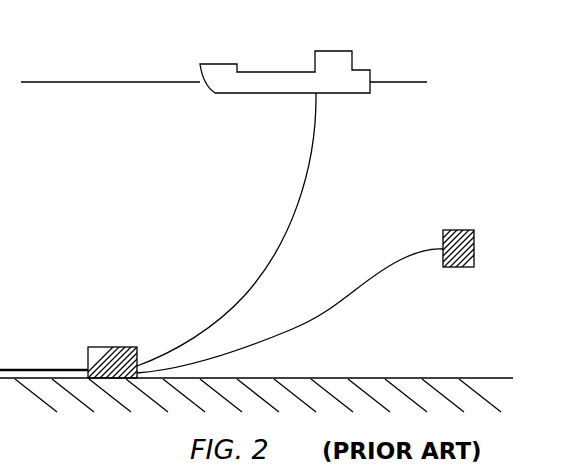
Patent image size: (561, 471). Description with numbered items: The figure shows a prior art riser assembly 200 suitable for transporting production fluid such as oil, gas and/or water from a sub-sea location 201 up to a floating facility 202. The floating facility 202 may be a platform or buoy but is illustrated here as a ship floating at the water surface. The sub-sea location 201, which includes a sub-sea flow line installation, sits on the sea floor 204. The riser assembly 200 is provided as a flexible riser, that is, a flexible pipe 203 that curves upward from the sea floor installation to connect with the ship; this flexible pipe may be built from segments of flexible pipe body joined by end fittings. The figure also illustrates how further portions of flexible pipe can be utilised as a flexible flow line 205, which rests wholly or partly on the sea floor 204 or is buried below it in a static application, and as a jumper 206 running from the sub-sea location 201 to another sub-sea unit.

The riser assembly 200 is at (447, 162).
The sub-sea location 201 is at (110, 346).
The floating facility 202 is at (214, 63).
The flexible pipe 203 is at (297, 193).
The sea floor 204 is at (440, 377).
The flexible flow line 205 is at (28, 369).
The jumper 206 is at (390, 262).